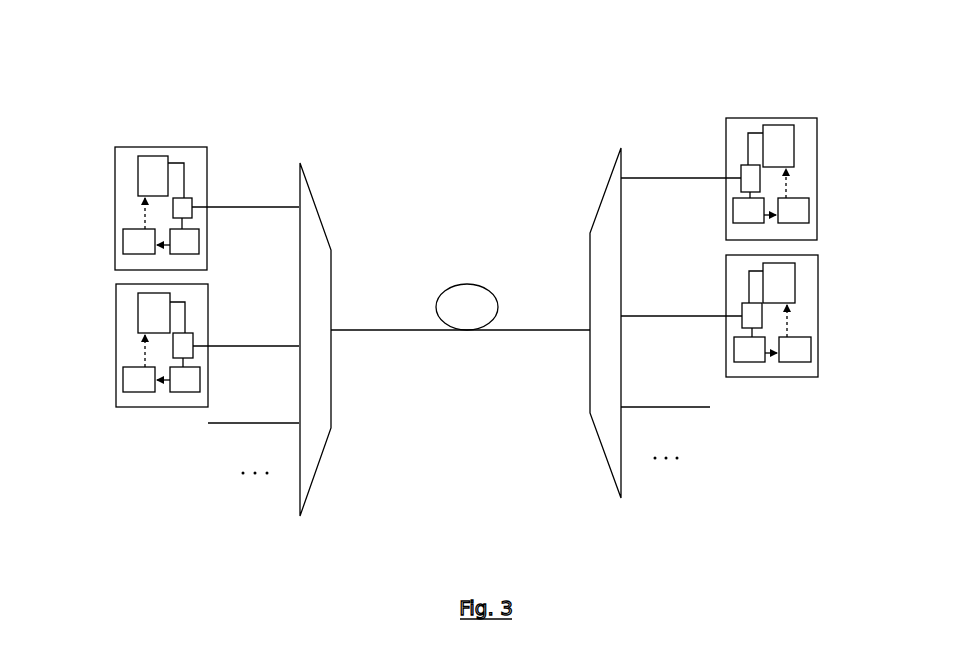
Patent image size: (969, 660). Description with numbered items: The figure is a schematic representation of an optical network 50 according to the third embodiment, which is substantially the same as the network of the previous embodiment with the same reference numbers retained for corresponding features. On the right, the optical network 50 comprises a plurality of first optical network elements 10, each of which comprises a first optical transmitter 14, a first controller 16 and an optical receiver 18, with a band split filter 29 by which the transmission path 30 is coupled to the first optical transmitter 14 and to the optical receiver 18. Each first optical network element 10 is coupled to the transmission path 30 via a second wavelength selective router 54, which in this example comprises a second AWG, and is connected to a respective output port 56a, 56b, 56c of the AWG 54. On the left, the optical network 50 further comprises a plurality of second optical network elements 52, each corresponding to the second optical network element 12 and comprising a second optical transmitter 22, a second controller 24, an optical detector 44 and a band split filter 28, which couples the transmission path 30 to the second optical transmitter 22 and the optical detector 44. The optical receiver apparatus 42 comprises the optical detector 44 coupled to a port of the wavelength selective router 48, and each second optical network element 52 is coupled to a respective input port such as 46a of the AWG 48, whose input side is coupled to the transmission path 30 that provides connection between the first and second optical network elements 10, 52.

The first optical network element 10 is at (737, 132).
The second optical network element 12 is at (96, 166).
The first optical transmitter 14 is at (777, 150).
The first controller 16 is at (798, 210).
The optical receiver 18 is at (742, 212).
The second optical transmitter 22 is at (147, 176).
The second controller 24 is at (132, 243).
The second band split filter 28 is at (187, 205).
The band split filter 29 is at (748, 183).
The transmission path 30 is at (405, 330).
The optical receiver apparatus 42 is at (326, 299).
The optical detector 44 is at (183, 239).
The input port 46a is at (243, 207).
The wavelength selective router 48 is at (312, 438).
The optical network 50 is at (459, 181).
The second optical network element 52 is at (182, 155).
The second wavelength selective router 54 is at (609, 429).
The output port 56a is at (643, 178).
The output port 56b is at (657, 318).
The output port 56c is at (687, 407).